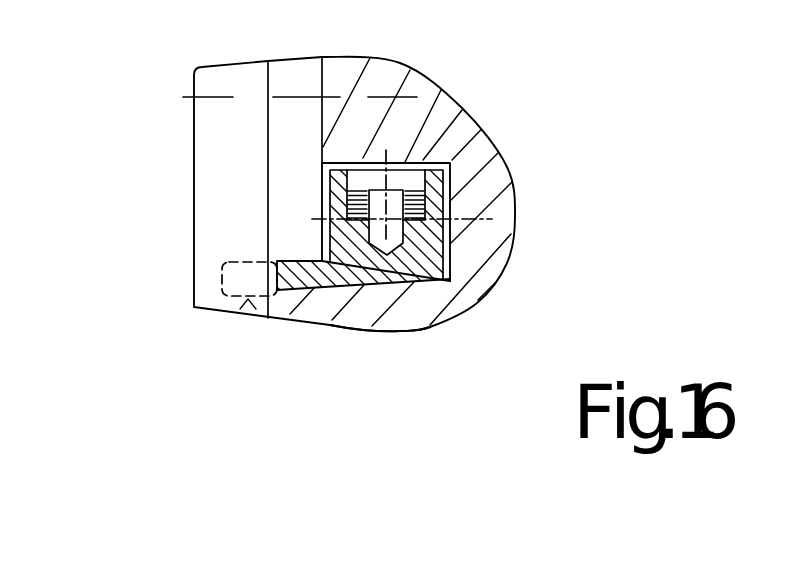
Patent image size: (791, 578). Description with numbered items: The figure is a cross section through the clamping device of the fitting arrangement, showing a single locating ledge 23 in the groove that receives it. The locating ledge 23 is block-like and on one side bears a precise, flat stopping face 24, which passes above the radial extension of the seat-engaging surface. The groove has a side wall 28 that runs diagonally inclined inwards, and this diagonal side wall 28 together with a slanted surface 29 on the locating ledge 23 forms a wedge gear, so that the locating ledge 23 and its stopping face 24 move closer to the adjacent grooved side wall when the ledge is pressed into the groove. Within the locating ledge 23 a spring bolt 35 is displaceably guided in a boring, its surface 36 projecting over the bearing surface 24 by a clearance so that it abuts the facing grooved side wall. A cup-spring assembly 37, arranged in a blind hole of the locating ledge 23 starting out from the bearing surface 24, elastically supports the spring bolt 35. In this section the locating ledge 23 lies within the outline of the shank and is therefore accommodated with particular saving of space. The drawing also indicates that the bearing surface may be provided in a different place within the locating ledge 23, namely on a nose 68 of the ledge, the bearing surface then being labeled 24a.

The locating ledge 23 is at (440, 250).
The stopping face 24 is at (300, 320).
The bearing surface 24a is at (248, 300).
The side wall 28 is at (423, 288).
The slanted surface 29 is at (363, 288).
The spring bolt 35 is at (450, 163).
The surface 36 is at (450, 160).
The cup-spring assembly 37 is at (450, 200).
The nose 68 is at (243, 280).